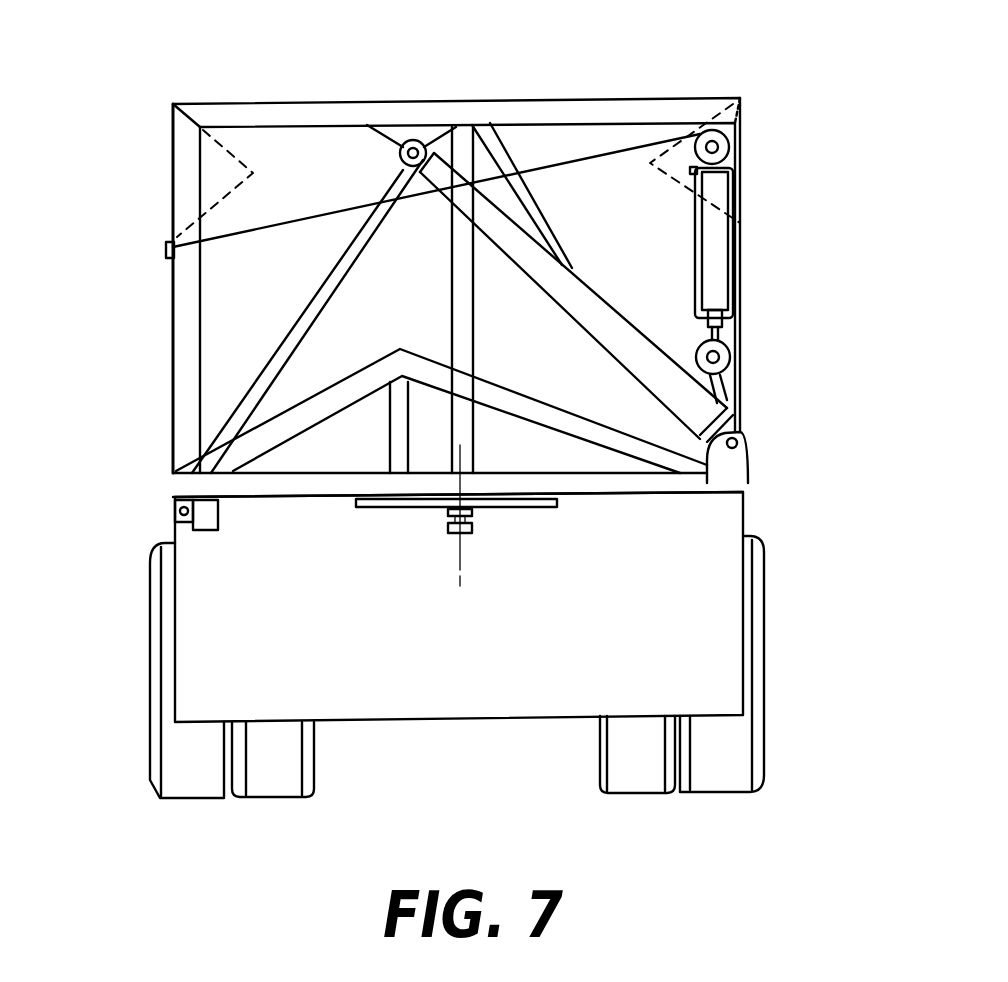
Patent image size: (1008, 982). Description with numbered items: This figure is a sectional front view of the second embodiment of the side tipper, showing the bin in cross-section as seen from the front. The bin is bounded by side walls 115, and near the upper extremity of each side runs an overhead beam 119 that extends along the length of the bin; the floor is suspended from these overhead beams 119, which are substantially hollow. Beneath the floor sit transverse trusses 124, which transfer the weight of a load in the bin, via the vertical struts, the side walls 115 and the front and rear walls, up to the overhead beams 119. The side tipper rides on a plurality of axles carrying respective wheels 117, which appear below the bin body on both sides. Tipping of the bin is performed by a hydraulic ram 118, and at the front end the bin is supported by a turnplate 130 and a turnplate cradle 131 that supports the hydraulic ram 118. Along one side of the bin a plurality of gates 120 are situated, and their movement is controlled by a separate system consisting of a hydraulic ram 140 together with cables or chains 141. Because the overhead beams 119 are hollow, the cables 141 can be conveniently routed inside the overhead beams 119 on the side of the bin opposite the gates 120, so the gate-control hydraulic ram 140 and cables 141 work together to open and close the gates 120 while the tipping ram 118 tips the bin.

The side walls 115 is at (173, 210).
The wheels 117 is at (185, 778).
The hydraulic ram 118 is at (547, 276).
The overhead beams 119 is at (208, 170).
The gates 120 is at (173, 327).
The transverse trusses 124 is at (484, 701).
The turnplate 130 is at (464, 534).
The turnplate cradle 131 is at (657, 482).
The hydraulic ram 140 is at (713, 250).
The cables 141 is at (581, 157).